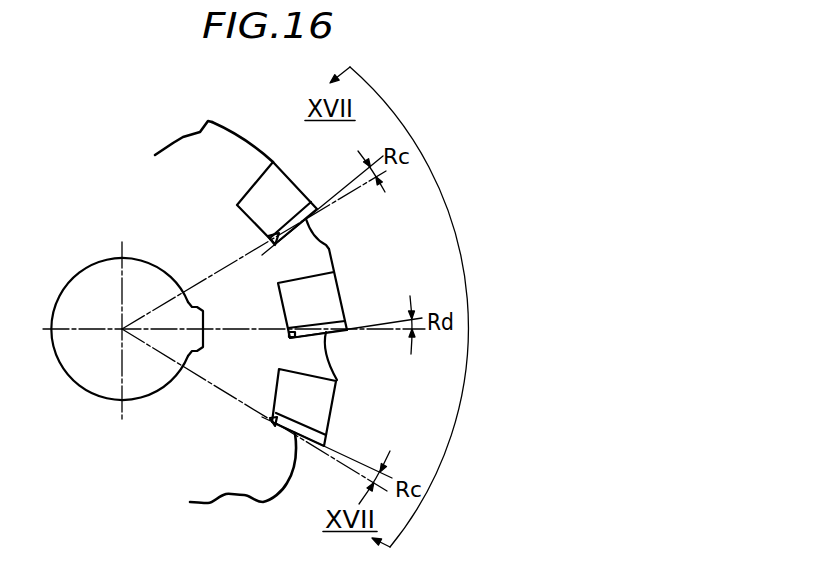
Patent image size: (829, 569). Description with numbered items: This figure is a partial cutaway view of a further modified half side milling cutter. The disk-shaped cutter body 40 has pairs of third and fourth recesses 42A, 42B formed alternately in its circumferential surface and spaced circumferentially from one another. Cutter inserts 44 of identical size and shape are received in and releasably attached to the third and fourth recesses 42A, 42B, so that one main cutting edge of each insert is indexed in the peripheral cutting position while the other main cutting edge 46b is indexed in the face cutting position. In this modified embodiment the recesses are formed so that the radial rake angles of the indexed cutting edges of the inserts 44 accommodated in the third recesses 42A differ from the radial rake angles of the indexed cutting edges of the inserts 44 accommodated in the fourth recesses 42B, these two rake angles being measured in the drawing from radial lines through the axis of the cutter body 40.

The cutter body 40 is at (249, 139).
The third recess 42A is at (270, 246).
The fourth recess 42B is at (291, 337).
The cutter insert 44 is at (304, 194).
The main cutting edge 46b is at (307, 219).